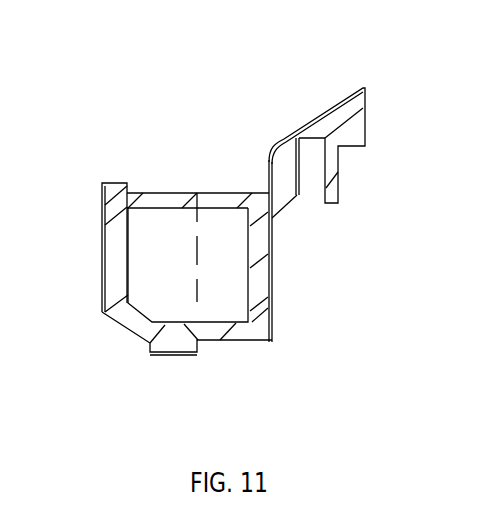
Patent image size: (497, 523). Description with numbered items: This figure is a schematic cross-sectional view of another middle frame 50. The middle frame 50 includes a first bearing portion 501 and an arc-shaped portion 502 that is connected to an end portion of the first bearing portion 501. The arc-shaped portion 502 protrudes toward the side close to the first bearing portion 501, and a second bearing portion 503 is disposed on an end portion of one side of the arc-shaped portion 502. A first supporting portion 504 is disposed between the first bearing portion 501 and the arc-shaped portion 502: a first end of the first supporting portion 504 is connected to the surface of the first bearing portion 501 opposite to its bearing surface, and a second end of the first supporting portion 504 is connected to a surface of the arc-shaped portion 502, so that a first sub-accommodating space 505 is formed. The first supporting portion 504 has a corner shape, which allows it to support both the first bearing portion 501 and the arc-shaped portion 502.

The middle frame 50 is at (213, 427).
The first bearing portion 501 is at (158, 193).
The arc-shaped portion 502 is at (287, 168).
The second bearing portion 503 is at (360, 90).
The first supporting portion 504 is at (112, 245).
The first sub-accommodating space 505 is at (167, 303).